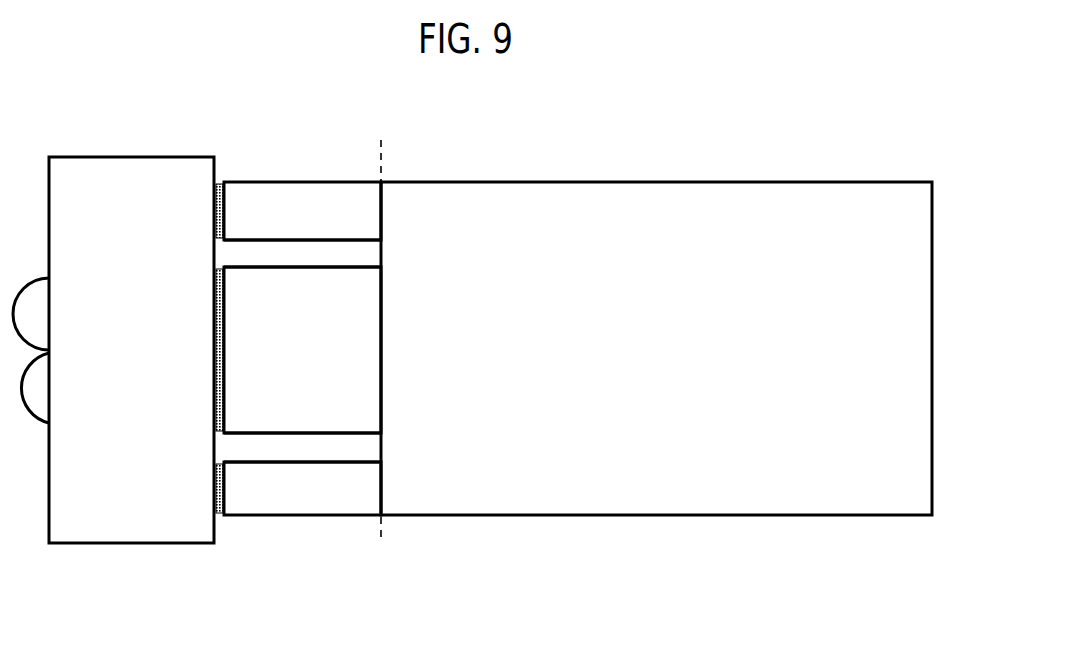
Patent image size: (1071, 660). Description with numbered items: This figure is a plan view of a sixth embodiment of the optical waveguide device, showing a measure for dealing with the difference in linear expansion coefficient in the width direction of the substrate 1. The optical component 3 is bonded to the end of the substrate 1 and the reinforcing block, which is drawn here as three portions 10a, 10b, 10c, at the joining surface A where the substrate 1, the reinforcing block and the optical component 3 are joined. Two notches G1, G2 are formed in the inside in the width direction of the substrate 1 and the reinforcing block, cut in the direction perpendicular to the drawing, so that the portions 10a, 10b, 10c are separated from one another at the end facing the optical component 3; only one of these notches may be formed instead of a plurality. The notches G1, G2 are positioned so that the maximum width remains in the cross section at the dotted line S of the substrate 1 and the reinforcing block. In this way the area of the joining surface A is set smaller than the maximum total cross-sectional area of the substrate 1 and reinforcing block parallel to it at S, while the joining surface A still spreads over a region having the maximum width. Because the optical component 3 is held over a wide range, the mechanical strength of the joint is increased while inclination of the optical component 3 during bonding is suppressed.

The substrate 1 is at (627, 256).
The optical component 3 is at (124, 183).
The reinforcing block 10a is at (307, 220).
The reinforcing block 10b is at (328, 359).
The reinforcing block 10c is at (340, 485).
The joining surface A is at (226, 328).
The notch G1 is at (270, 442).
The notch G2 is at (270, 260).
The cross section S is at (382, 322).